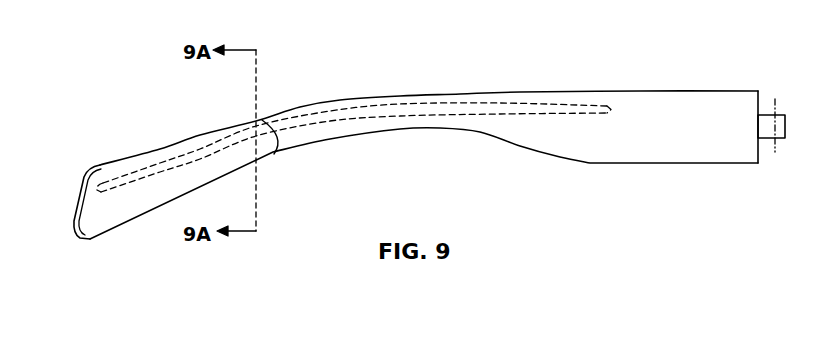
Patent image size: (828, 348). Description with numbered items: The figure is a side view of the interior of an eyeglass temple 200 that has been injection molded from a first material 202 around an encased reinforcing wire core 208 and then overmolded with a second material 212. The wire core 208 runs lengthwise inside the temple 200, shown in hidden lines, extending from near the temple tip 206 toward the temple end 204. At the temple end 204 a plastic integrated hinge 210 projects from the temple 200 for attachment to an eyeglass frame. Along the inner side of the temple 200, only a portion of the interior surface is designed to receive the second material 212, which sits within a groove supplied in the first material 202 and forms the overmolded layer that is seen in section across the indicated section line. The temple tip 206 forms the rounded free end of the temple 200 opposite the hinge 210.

The temple 200 is at (428, 167).
The first material 202 is at (643, 102).
The temple end 204 is at (762, 100).
The temple tip 206 is at (73, 238).
The wire core 208 is at (502, 105).
The plastic integrated hinge 210 is at (778, 133).
The second material 212 is at (132, 196).